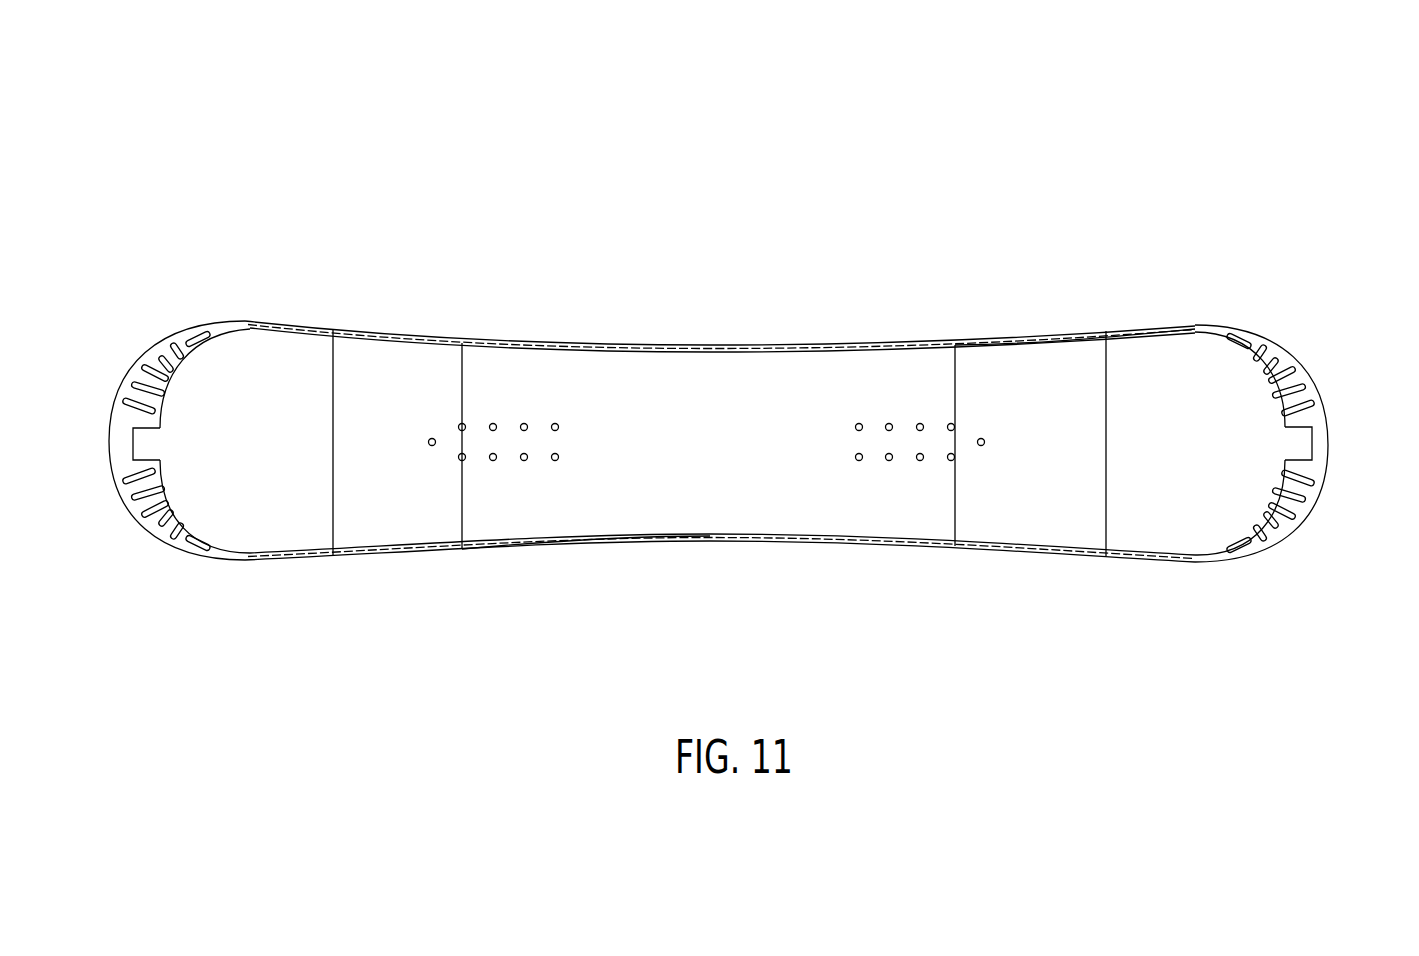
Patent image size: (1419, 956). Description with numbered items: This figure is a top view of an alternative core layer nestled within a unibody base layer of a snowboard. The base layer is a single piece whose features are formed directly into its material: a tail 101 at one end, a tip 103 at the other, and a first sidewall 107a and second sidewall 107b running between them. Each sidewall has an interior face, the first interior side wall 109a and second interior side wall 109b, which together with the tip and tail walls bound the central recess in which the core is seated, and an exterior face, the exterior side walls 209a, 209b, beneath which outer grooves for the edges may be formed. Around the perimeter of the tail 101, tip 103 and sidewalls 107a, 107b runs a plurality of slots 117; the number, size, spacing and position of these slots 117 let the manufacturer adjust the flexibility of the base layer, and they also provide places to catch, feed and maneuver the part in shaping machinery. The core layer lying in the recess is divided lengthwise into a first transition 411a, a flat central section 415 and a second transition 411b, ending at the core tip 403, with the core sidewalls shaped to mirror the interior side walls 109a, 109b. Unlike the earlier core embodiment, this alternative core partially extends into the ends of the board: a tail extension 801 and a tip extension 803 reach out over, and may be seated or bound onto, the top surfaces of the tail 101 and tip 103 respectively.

The tail 101 is at (117, 410).
The tip 103 is at (1327, 448).
The first sidewall 107a is at (613, 538).
The second sidewall 107b is at (775, 347).
The first interior side wall 109a is at (702, 537).
The second interior side wall 109b is at (1018, 340).
The slots 117 is at (1293, 518).
The exterior side wall of the first sidewall 209a is at (845, 545).
The exterior side wall of the second sidewall 209b is at (650, 343).
The core tip 403 is at (1202, 372).
The first transition 411a is at (249, 365).
The second transition 411b is at (1032, 520).
The central section 415 is at (626, 395).
The tail extension 801 is at (145, 440).
The tip extension 803 is at (1298, 440).